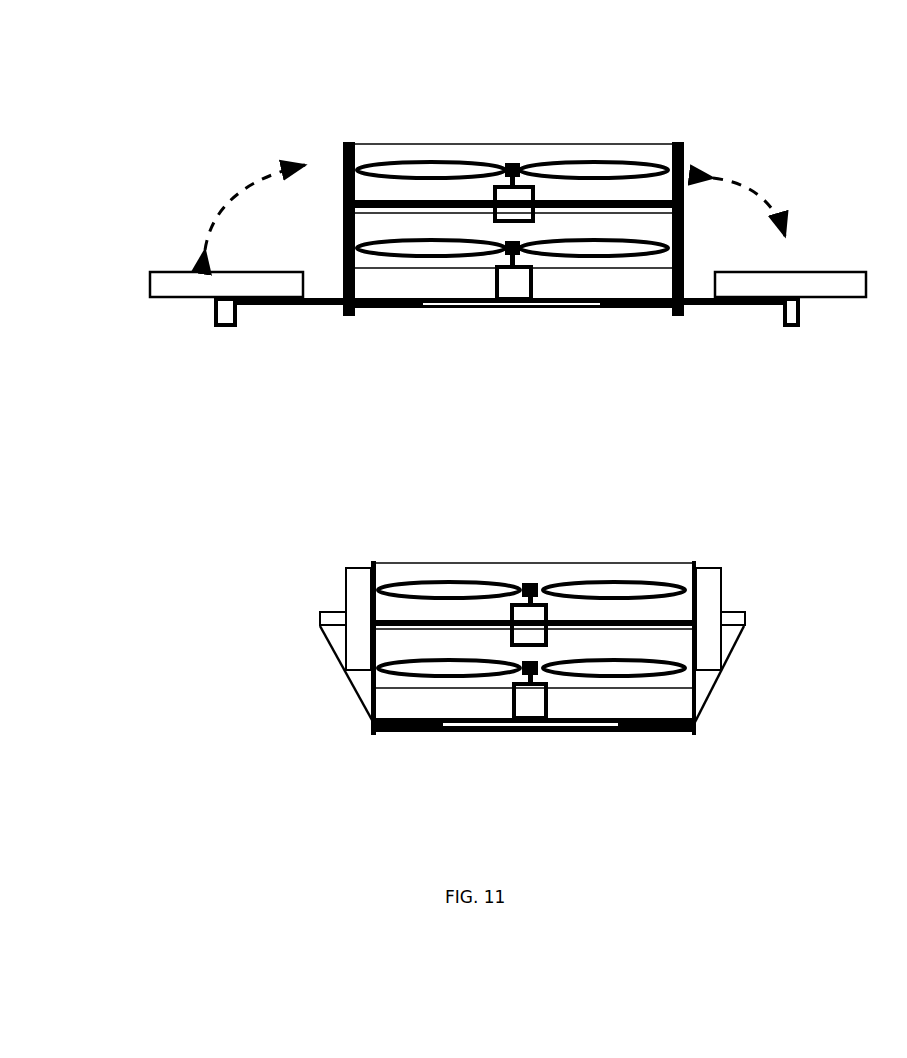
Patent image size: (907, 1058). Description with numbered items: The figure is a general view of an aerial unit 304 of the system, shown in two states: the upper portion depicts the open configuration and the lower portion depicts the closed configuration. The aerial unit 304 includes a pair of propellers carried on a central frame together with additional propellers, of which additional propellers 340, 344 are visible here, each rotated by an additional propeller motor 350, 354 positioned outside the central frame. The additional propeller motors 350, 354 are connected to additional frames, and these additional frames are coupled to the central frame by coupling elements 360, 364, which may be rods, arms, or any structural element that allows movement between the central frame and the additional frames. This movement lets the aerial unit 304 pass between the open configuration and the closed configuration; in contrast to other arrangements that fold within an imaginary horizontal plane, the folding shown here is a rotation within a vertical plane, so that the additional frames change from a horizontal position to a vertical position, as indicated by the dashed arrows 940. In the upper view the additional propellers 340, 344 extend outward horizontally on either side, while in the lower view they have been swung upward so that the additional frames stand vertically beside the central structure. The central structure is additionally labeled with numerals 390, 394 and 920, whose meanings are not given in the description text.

The aerial unit 304 is at (158, 230).
The additional propeller 340 is at (180, 305).
The additional propeller motor 350 is at (281, 462).
The additional propeller 344 is at (866, 332).
The additional propeller motor 354 is at (759, 462).
The coupling element 360 is at (308, 308).
The coupling element 364 is at (725, 305).
The frame post 390 is at (346, 318).
The base plate 394 is at (672, 318).
The propulsion module 920 is at (685, 140).
The dashed arrows 940 is at (495, 207).